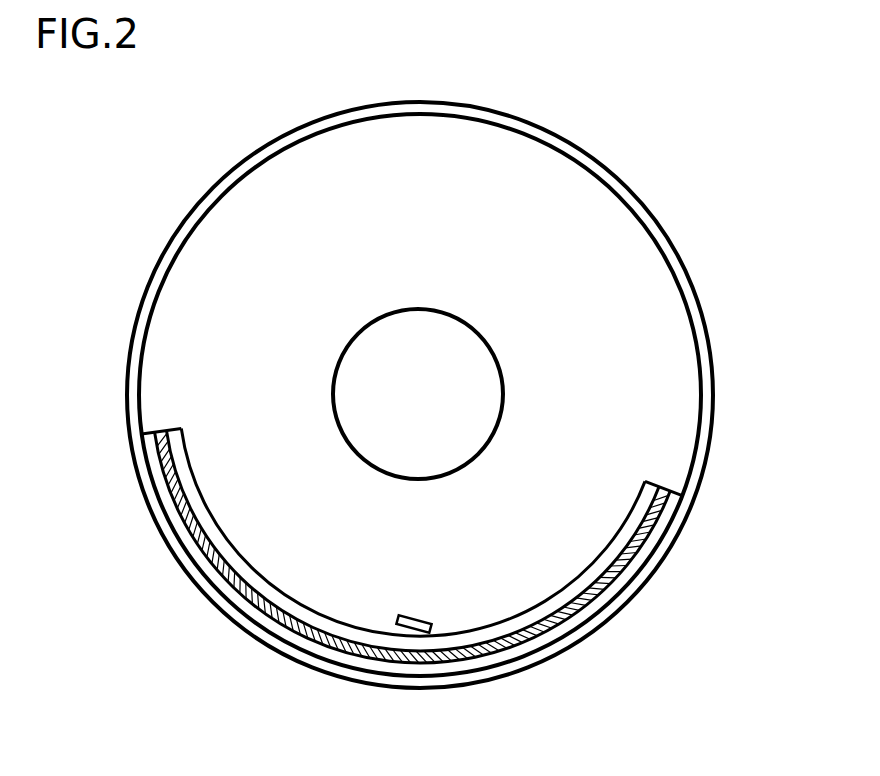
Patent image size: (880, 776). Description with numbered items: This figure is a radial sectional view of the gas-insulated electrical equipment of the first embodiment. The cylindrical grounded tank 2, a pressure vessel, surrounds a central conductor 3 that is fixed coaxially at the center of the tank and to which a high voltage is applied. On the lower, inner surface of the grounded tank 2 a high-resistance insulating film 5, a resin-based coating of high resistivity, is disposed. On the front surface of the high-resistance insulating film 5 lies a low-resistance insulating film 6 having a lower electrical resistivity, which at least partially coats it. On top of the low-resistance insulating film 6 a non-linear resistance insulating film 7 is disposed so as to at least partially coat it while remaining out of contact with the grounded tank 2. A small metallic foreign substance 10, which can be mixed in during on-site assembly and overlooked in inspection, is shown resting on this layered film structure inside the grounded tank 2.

The grounded tank 2 is at (476, 118).
The central conductor 3 is at (452, 348).
The high-resistance insulating film 5 is at (612, 594).
The low-resistance insulating film 6 is at (282, 627).
The non-linear resistance insulating film 7 is at (222, 552).
The metallic foreign substance 10 is at (430, 630).